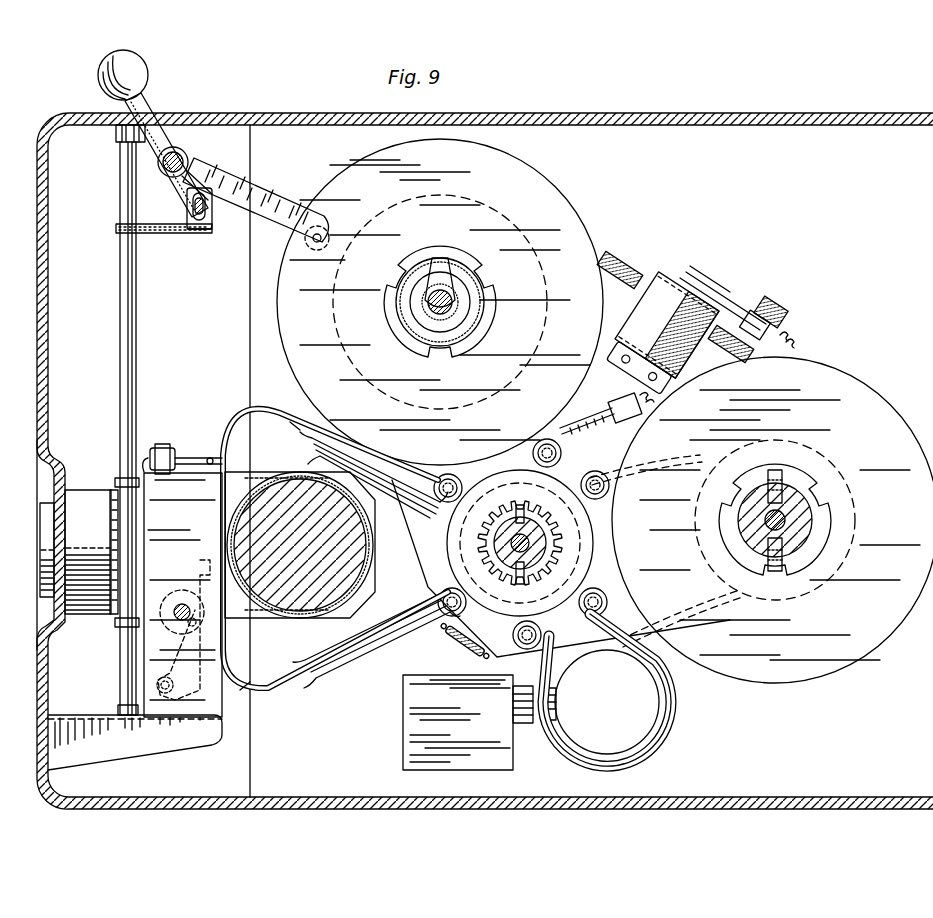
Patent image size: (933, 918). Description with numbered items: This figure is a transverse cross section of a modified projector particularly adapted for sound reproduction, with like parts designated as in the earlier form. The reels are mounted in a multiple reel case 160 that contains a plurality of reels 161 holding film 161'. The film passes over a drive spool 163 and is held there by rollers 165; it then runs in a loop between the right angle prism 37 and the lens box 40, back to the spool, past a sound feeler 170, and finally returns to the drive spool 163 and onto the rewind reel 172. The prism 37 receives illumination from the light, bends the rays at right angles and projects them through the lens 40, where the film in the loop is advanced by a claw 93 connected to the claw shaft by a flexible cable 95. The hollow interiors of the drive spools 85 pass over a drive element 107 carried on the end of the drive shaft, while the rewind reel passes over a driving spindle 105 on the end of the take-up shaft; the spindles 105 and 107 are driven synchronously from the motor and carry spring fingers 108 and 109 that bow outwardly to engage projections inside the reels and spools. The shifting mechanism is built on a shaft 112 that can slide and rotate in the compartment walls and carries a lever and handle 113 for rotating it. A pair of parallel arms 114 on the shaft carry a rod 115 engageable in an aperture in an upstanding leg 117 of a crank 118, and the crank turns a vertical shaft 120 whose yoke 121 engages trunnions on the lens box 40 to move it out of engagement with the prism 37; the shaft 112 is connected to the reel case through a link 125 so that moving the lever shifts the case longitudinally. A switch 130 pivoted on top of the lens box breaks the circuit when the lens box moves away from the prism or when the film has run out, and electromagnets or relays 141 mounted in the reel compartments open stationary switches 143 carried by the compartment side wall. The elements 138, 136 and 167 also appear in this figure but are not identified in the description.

The lever and handle 113 is at (148, 76).
The shaft 112 is at (180, 150).
The parallel arms 114 is at (200, 172).
The link 125 is at (242, 190).
The upstanding leg 117 is at (187, 208).
The rod 115 is at (200, 230).
The crank 118 is at (165, 234).
The vertical shaft 120 is at (138, 335).
The reels 161 is at (448, 302).
The reel hub 138 is at (395, 278).
The hub key 136 is at (448, 282).
The multiple reel case 160 is at (628, 295).
The electromagnets or relays 141 is at (700, 340).
The switches 143 is at (720, 300).
The film 161' is at (607, 403).
The rewind reel 172 is at (840, 385).
The driving spindle 105 is at (800, 515).
The spring fingers 108 is at (800, 548).
The drive spool 163 is at (500, 480).
The drive spools 85 is at (455, 523).
The drive element 107 is at (545, 548).
The spring fingers 109 is at (525, 575).
The rollers 165 is at (440, 475).
The belt 167 is at (240, 418).
The right angle prism 37 is at (320, 539).
The lens box 40 is at (180, 495).
The switch 130 is at (160, 446).
The claw 93 is at (198, 560).
The flexible cable 95 is at (178, 600).
The yoke 121 is at (112, 480).
The sound feeler 170 is at (635, 722).